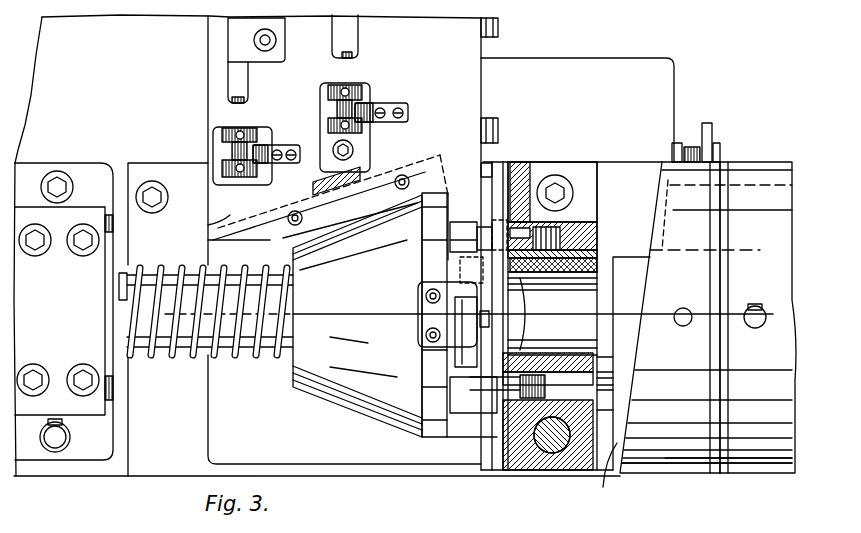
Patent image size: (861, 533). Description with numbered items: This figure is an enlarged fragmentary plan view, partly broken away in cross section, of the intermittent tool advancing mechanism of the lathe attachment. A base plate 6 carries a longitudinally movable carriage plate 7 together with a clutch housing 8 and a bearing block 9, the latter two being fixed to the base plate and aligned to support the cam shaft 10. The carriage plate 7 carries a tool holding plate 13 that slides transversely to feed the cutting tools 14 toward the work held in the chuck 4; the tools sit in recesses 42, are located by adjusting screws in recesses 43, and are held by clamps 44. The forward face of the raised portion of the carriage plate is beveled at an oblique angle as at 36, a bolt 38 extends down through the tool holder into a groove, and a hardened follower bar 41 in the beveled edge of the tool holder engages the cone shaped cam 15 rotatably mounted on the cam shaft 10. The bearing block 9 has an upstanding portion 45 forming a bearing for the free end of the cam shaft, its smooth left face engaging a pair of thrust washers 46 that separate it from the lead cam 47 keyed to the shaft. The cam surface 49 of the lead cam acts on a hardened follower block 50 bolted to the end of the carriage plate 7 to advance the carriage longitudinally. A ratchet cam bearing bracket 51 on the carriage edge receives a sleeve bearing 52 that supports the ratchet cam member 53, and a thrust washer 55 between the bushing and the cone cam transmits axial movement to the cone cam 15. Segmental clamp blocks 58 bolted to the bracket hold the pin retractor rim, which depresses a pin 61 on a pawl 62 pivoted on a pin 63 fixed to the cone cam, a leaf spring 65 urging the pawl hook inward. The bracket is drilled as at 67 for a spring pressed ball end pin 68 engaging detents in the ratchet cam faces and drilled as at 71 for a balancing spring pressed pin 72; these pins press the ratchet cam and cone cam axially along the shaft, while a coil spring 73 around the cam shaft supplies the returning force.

The chuck 4 is at (163, 360).
The base plate 6 is at (660, 67).
The carriage plate 7 is at (215, 425).
The clutch housing 8 is at (72, 335).
The bearing block 9 is at (742, 160).
The cam shaft 10 is at (248, 360).
The tool holding plate 13 is at (472, 52).
The cutting tools 14 is at (232, 75).
The cone shaped cam 15 is at (367, 403).
The beveled forward face 36 is at (208, 225).
The bolt 38 is at (340, 153).
The follower bar 41 is at (283, 238).
The recesses 42 is at (250, 103).
The adjusting screw recesses 43 is at (267, 192).
The clamps 44 is at (232, 33).
The upstanding bearing portion 45 is at (773, 465).
The thrust washers 46 is at (723, 465).
The lead cam 47 is at (682, 465).
The cam surface 49 is at (603, 477).
The follower block 50 is at (605, 398).
The ratchet cam bearing bracket 51 is at (530, 173).
The sleeve bearing 52 is at (588, 352).
The ratchet cam member 53 is at (460, 410).
The thrust washer 55 is at (445, 363).
The segmental clamp blocks 58 is at (493, 165).
The pin 61 is at (440, 263).
The pawl 62 is at (472, 335).
The pivot pin 63 is at (489, 312).
The leaf spring 65 is at (423, 327).
The drilled hole 67 is at (560, 222).
The spring pressed ball end pin 68 is at (597, 241).
The drilled hole 71 is at (543, 375).
The spring pressed pin 72 is at (605, 388).
The coil spring 73 is at (197, 356).